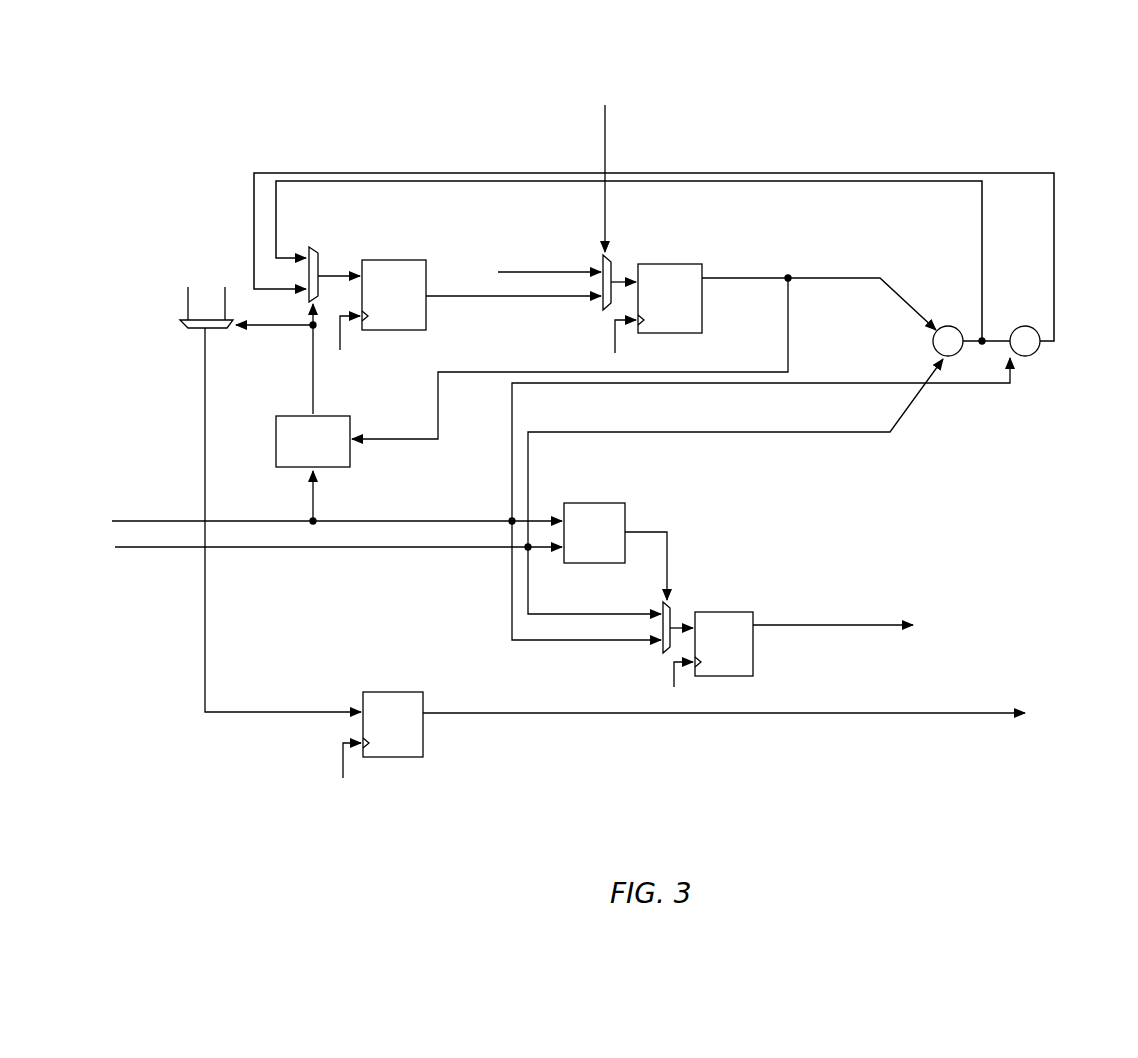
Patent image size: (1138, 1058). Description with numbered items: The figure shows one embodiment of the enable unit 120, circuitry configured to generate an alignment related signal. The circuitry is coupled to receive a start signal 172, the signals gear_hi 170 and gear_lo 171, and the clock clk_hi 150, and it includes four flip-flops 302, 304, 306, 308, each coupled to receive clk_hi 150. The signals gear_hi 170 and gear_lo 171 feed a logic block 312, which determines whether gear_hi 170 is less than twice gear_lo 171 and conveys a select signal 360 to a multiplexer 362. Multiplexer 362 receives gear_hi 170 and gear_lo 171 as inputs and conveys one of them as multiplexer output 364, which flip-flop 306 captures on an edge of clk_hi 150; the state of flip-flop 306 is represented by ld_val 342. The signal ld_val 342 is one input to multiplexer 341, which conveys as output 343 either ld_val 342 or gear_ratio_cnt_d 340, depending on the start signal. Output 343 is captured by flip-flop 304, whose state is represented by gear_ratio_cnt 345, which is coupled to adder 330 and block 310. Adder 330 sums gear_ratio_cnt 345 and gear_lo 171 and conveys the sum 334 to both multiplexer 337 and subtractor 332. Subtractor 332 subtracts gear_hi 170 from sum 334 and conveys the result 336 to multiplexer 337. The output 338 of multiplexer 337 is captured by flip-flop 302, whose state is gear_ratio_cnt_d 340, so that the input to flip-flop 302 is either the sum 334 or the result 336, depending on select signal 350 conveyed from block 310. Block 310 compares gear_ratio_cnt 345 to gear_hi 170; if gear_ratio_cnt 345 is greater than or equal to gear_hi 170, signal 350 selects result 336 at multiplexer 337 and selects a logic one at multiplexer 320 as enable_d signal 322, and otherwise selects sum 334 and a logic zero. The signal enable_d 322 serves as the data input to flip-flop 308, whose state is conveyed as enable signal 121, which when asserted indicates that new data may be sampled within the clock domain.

The enable unit 120 is at (300, 116).
The start signal 172 is at (607, 128).
The subtractor result 336 is at (1055, 288).
The sum 334 is at (980, 283).
The multiplexer 337 is at (317, 245).
The multiplexer output 338 is at (337, 272).
The flip-flop 302 is at (394, 295).
The gear_ratio_cnt_d 340 is at (444, 297).
The ld_val 342 is at (518, 270).
The multiplexer 341 is at (612, 262).
The multiplexer output 343 is at (615, 278).
The flip-flop 304 is at (670, 298).
The gear_ratio_cnt 345 is at (860, 276).
The adder 330 is at (933, 347).
The subtractor 332 is at (1040, 354).
The clk_hi 150 is at (615, 337).
The select signal 350 is at (313, 383).
The multiplexer 320 is at (192, 329).
The enable_d signal 322 is at (203, 658).
The gear_hi 170 is at (185, 518).
The gear_lo 171 is at (193, 547).
The block 310 is at (313, 441).
The logic block 312 is at (594, 533).
The select signal 360 is at (638, 530).
The multiplexer 362 is at (672, 603).
The multiplexer output 364 is at (681, 622).
The flip-flop 306 is at (724, 644).
The flip-flop 308 is at (393, 724).
The enable signal 121 is at (957, 712).